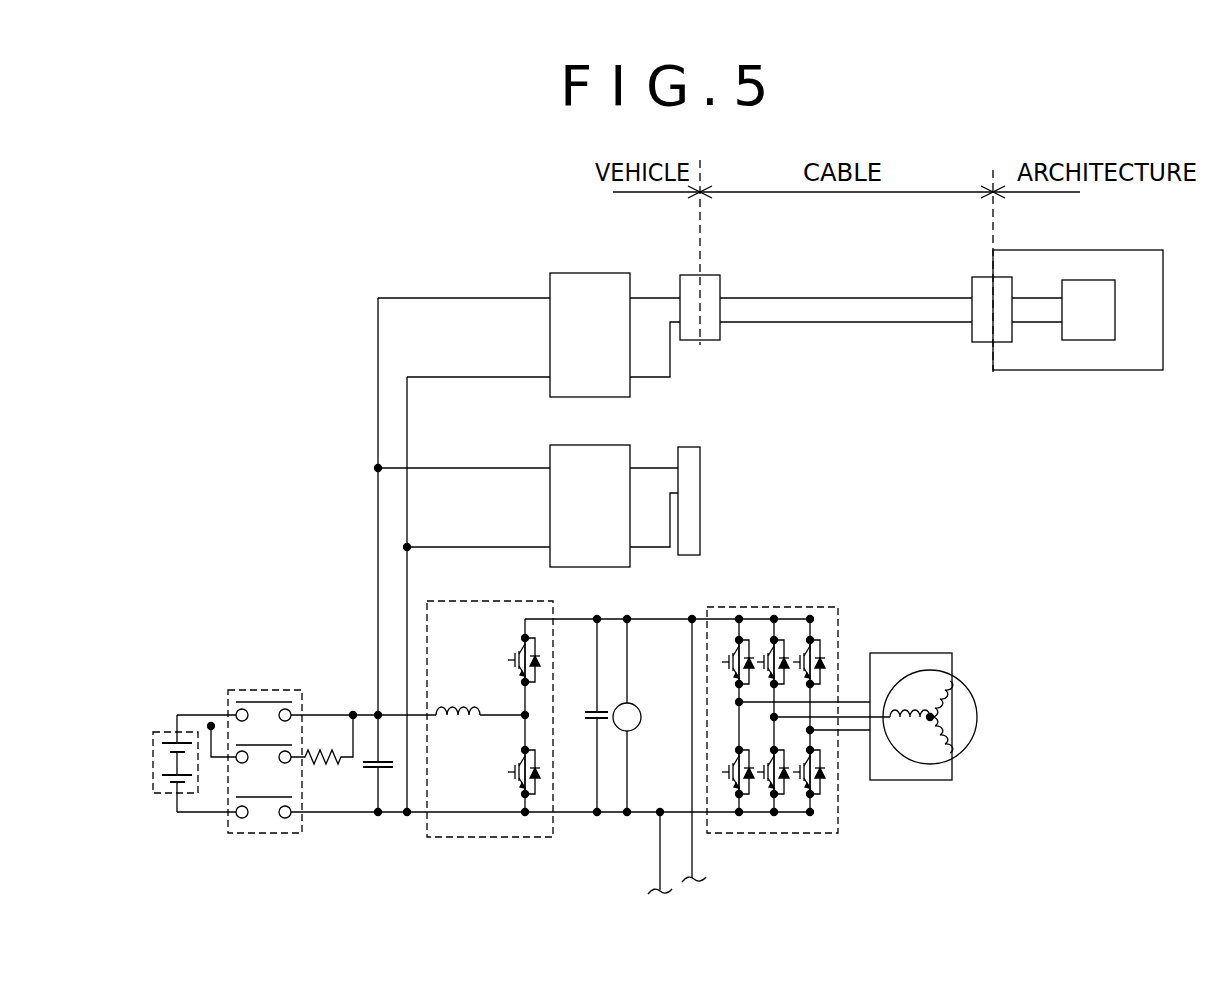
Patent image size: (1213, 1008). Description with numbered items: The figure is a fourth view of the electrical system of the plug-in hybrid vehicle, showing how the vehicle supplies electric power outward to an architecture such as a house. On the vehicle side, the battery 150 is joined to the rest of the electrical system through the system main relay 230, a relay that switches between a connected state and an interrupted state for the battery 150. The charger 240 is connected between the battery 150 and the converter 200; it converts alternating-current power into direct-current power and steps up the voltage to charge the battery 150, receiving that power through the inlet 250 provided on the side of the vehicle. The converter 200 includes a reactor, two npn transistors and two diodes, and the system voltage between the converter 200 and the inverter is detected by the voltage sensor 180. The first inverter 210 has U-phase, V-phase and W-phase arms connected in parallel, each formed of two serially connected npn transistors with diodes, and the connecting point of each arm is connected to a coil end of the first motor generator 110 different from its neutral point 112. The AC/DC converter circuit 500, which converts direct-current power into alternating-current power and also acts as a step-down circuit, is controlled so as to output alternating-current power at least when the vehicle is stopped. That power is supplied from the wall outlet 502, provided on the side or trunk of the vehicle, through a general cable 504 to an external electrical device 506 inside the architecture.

The first motor generator 110 is at (954, 693).
The neutral point 112 is at (929, 714).
The battery 150 is at (155, 731).
The voltage sensor 180 is at (640, 730).
The converter 200 is at (538, 600).
The first inverter 210 is at (838, 788).
The system main relay 230 is at (259, 688).
The charger 240 is at (550, 502).
The inlet 250 is at (700, 506).
The AC/DC converter circuit 500 is at (550, 330).
The wall outlet 502 is at (693, 275).
The general cable 504 is at (860, 349).
The external electrical device 506 is at (1089, 340).